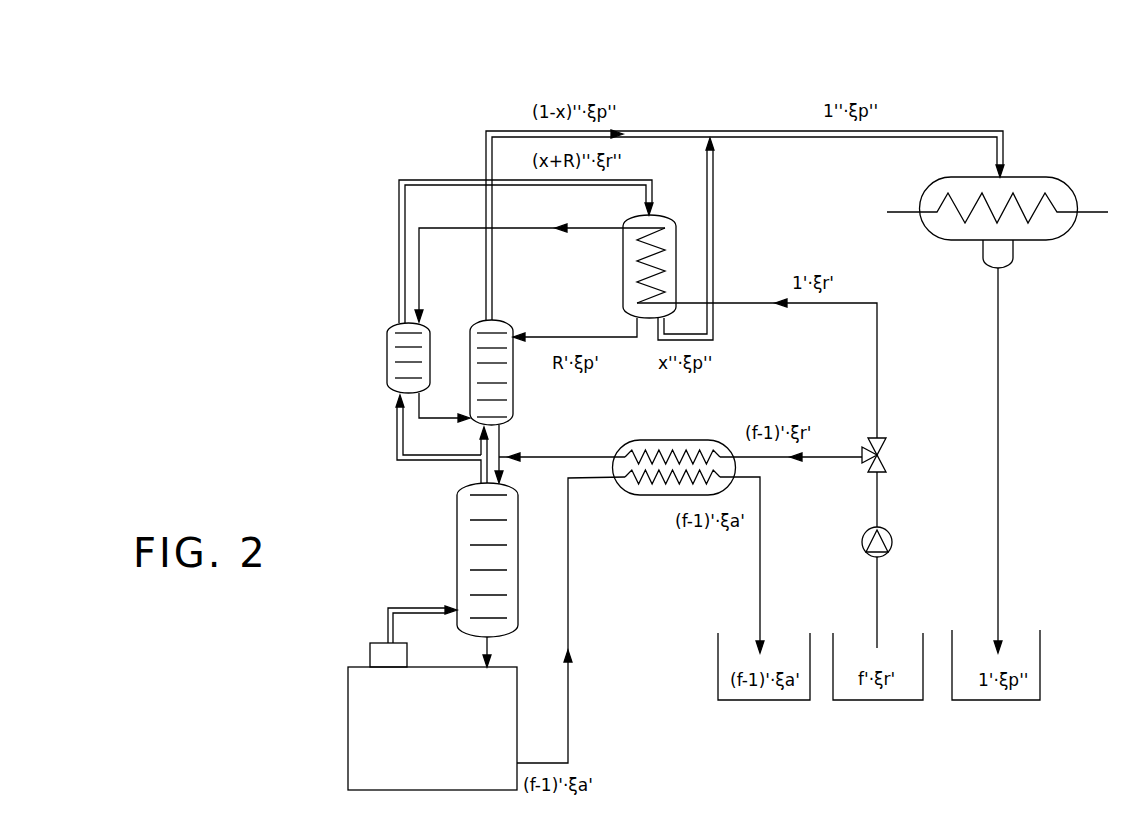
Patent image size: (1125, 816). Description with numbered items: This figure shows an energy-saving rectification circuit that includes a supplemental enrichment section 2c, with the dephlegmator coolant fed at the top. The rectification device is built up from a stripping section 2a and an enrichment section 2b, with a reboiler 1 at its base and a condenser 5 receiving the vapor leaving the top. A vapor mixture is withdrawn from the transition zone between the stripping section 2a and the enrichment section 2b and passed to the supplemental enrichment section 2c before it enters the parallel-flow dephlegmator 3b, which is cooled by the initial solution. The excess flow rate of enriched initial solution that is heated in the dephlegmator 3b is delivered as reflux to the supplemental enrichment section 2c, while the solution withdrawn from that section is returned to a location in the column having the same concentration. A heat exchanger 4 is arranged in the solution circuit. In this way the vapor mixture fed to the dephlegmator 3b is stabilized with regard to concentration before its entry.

The reboiler 1 is at (358, 733).
The stripping section of rectification device 2a is at (473, 540).
The enrichment section of rectification device 2b is at (477, 370).
The supplemental enrichment section of rectification device 2c is at (390, 352).
The parallel-flow dephlegmator 3b is at (633, 288).
The heat exchanger 4 is at (628, 488).
The condenser 5 is at (940, 230).